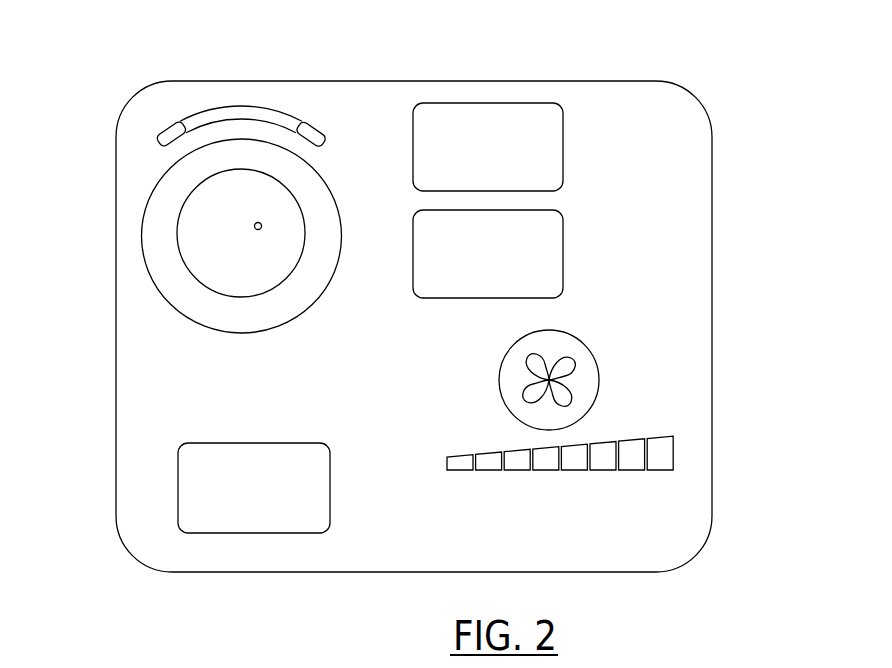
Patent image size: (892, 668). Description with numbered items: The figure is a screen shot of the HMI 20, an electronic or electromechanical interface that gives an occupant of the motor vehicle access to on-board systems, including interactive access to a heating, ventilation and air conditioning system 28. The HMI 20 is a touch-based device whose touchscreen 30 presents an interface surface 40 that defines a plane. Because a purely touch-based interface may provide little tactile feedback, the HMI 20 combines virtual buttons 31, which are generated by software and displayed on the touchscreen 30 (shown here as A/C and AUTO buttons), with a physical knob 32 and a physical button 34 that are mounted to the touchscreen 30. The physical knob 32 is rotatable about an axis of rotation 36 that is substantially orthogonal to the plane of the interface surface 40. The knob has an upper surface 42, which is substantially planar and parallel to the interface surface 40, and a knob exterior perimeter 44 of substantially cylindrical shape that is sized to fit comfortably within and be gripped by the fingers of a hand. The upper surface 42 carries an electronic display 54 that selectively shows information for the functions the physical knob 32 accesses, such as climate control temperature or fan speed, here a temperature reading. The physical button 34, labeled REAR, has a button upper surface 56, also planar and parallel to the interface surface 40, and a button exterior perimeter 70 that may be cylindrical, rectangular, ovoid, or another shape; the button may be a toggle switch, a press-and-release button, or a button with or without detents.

The HMI 20 is at (735, 147).
The touchscreen 30 is at (460, 326).
The heating, ventilation and air conditioning (HVAC) system 28 is at (720, 84).
The interface surface 40 is at (712, 317).
The knob exterior perimeter 44 is at (152, 189).
The physical knob 32 is at (232, 318).
The electronic display 54 is at (257, 192).
The axis of rotation 36 is at (233, 235).
The upper surface 42 is at (207, 157).
The virtual buttons 31 is at (563, 258).
The physical button 34 is at (178, 486).
The button upper surface 56 is at (200, 517).
The button exterior perimeter 70 is at (268, 533).